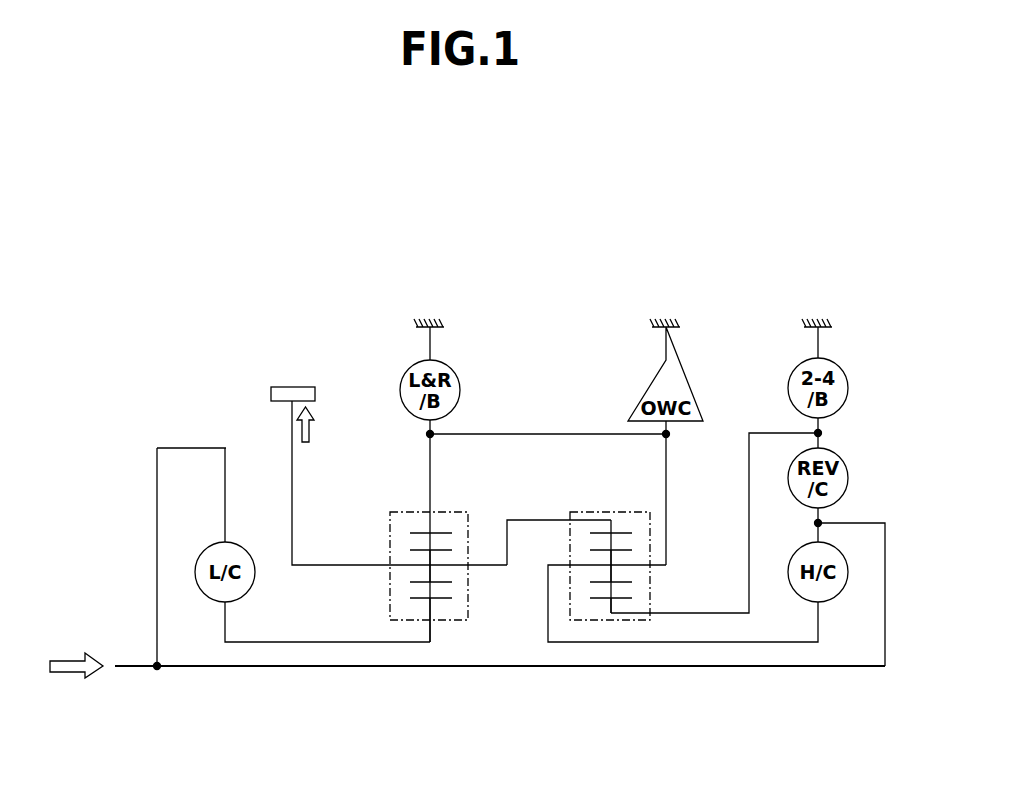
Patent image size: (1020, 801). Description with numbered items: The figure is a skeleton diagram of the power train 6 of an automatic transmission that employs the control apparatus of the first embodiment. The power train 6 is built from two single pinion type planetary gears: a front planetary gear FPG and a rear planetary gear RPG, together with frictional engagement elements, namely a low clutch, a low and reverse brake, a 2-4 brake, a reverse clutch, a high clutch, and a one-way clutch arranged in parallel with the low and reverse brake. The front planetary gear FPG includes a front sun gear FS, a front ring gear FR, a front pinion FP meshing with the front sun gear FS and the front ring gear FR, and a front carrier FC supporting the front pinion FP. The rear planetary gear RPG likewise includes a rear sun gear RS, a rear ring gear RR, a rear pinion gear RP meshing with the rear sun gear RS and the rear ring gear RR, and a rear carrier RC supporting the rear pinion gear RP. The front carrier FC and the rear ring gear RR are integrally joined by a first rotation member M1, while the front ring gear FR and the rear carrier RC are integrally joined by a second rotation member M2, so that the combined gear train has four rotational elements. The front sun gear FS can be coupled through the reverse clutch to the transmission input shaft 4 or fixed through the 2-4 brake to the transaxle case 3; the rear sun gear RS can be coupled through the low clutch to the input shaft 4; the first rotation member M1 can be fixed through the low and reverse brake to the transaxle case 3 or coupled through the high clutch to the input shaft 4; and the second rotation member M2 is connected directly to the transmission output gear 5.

The transaxle case 3 is at (438, 334).
The transmission input shaft 4 is at (312, 667).
The transmission output gear 5 is at (283, 387).
The power train 6 is at (140, 381).
The rear planetary gear RPG is at (417, 576).
The front planetary gear FPG is at (617, 584).
The first rotation member M1 is at (487, 433).
The second rotation member M2 is at (503, 520).
The rear ring gear RR is at (412, 540).
The rear pinion gear RP is at (412, 589).
The rear carrier RC is at (454, 567).
The rear sun gear RS is at (440, 594).
The front ring gear FR is at (630, 538).
The front pinion FP is at (600, 587).
The front carrier FC is at (632, 572).
The front sun gear FS is at (625, 592).